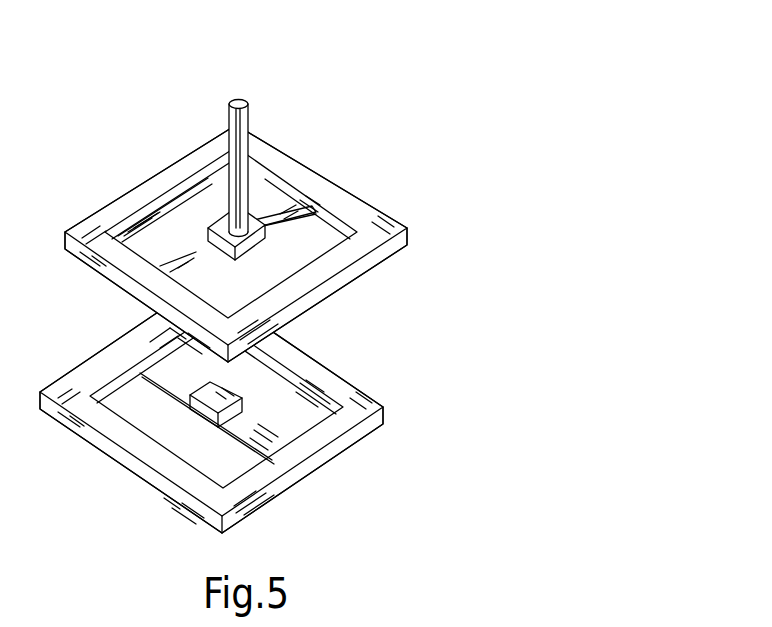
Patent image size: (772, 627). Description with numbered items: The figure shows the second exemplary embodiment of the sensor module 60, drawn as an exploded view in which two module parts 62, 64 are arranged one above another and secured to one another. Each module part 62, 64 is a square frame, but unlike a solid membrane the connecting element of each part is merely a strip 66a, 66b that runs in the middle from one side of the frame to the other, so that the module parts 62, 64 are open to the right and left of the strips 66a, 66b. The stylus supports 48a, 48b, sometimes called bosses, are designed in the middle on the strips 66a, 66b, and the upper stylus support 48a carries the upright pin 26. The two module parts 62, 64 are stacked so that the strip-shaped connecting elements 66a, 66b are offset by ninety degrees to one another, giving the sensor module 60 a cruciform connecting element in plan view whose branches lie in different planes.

The sensor module 60 is at (382, 278).
The module part 62 is at (270, 186).
The module part 64 is at (268, 414).
The pin 26 is at (247, 100).
The stylus support 48a is at (262, 135).
The stylus support 48b is at (198, 408).
The strip 66a is at (195, 251).
The strip 66b is at (255, 443).